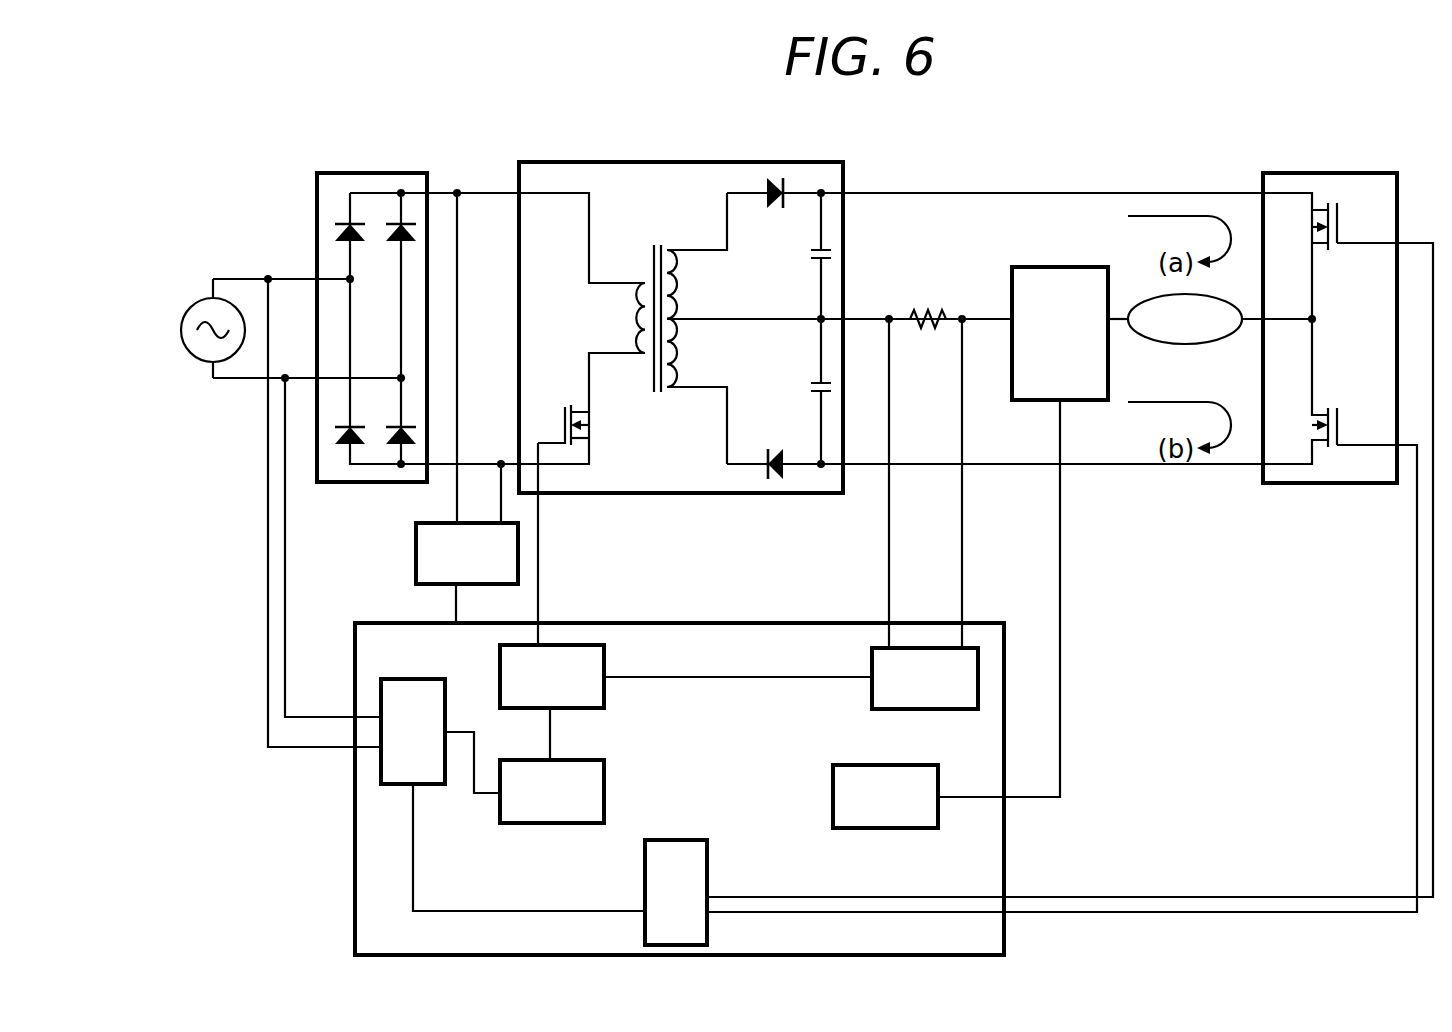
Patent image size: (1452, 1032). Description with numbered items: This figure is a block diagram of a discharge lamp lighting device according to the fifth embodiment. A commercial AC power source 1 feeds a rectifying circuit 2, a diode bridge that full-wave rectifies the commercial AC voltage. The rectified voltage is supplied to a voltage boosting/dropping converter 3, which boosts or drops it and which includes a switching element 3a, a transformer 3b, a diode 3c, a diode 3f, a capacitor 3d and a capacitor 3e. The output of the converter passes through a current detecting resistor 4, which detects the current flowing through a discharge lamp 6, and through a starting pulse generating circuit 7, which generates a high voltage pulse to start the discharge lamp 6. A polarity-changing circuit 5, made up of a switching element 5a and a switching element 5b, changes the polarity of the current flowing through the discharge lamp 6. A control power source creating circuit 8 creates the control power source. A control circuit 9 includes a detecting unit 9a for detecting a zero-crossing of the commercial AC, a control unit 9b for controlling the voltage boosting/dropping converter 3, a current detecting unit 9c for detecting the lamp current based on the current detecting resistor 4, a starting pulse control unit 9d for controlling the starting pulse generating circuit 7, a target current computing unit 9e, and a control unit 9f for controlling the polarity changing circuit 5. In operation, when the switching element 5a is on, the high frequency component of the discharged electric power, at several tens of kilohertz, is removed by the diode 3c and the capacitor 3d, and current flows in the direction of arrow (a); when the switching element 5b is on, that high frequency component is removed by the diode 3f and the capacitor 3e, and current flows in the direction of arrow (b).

The commercial AC power source 1 is at (210, 298).
The rectifying circuit 2 is at (350, 173).
The voltage boosting/dropping converter 3 is at (686, 162).
The switching element 3a is at (565, 425).
The transformer 3b is at (652, 282).
The diode 3c is at (776, 208).
The capacitor 3d is at (815, 264).
The capacitor 3e is at (810, 384).
The diode 3f is at (776, 446).
The current detecting resistor 4 is at (922, 310).
The polarity-changing circuit 5 is at (1316, 170).
The switching element 5a is at (1339, 225).
The switching element 5b is at (1336, 425).
The discharge lamp 6 is at (1188, 345).
The starting pulse generating circuit 7 is at (1062, 267).
The control power source creating circuit 8 is at (415, 553).
The control circuit 9 is at (652, 623).
The detecting unit 9a is at (390, 786).
The control unit 9b is at (604, 660).
The current detecting unit 9c is at (872, 657).
The starting pulse control unit 9d is at (833, 777).
The target current computing unit 9e is at (576, 760).
The control unit 9f is at (692, 840).